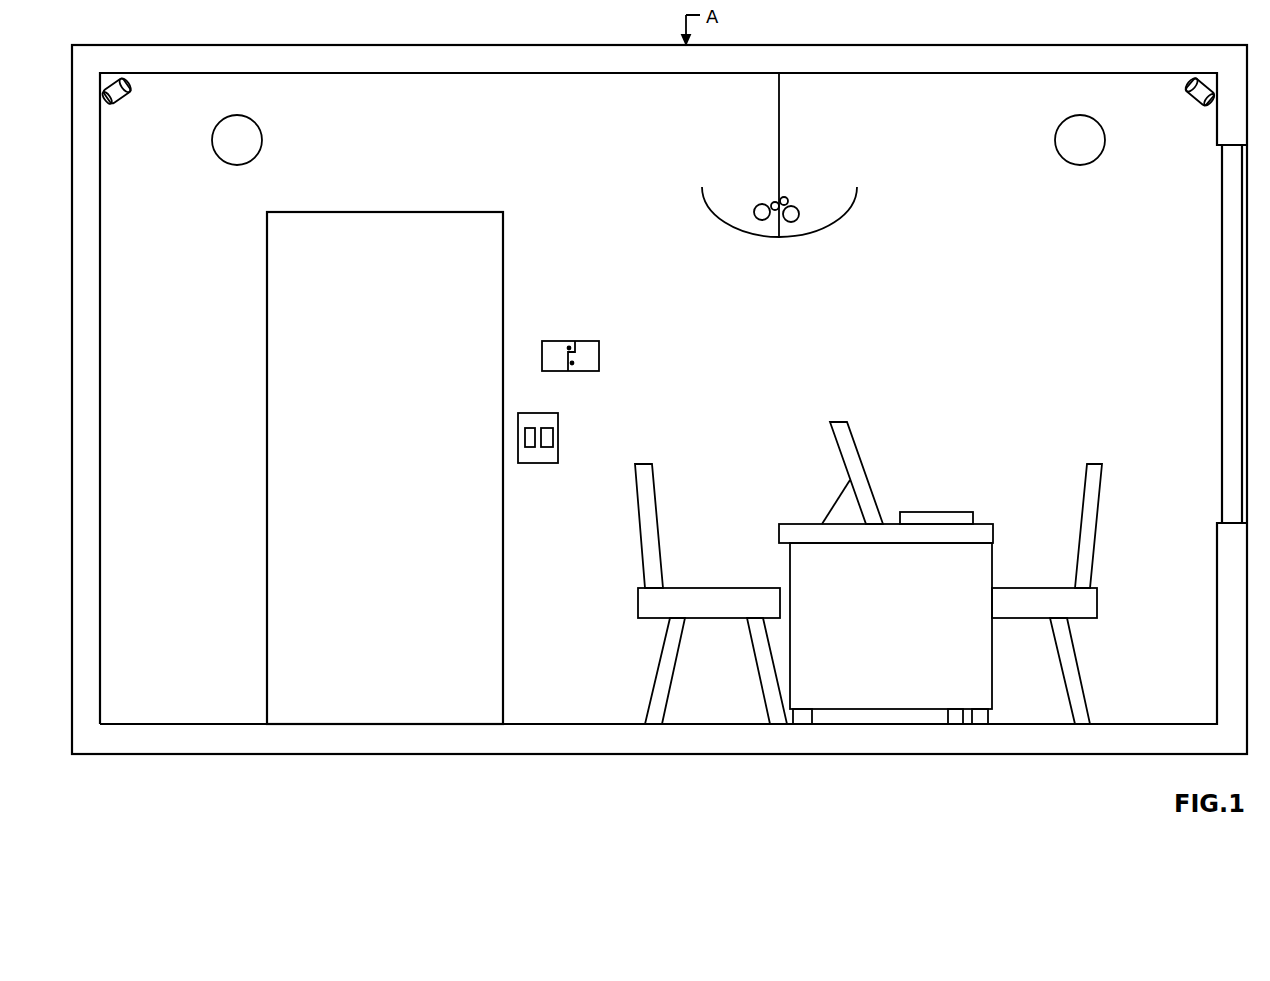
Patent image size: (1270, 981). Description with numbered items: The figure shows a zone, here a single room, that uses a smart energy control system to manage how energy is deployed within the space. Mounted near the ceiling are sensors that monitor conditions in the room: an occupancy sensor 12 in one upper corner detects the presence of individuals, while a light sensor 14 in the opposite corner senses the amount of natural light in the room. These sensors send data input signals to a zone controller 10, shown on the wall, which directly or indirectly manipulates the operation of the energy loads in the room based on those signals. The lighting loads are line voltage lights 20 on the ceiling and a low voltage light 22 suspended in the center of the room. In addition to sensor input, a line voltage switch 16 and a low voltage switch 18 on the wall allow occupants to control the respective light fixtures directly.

The zone controller 10 is at (599, 356).
The occupancy sensor 12 is at (1199, 110).
The light sensor 14 is at (121, 108).
The line voltage switch 16 is at (569, 465).
The low voltage switch 18 is at (553, 437).
The line voltage light 20 is at (262, 140).
The low voltage light 22 is at (788, 199).